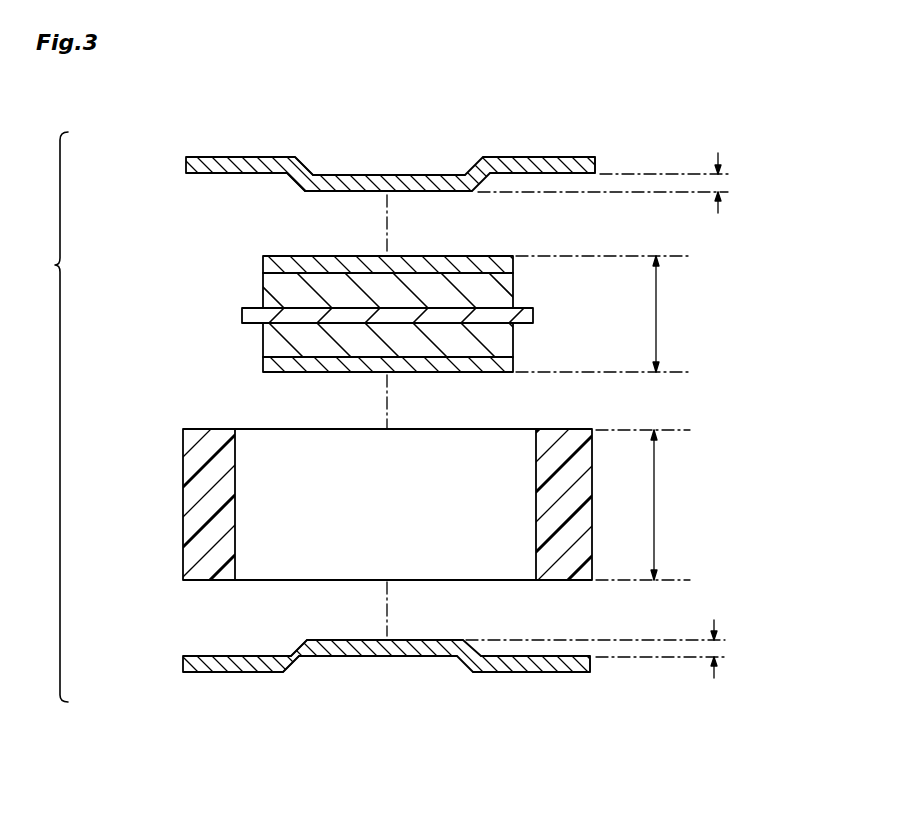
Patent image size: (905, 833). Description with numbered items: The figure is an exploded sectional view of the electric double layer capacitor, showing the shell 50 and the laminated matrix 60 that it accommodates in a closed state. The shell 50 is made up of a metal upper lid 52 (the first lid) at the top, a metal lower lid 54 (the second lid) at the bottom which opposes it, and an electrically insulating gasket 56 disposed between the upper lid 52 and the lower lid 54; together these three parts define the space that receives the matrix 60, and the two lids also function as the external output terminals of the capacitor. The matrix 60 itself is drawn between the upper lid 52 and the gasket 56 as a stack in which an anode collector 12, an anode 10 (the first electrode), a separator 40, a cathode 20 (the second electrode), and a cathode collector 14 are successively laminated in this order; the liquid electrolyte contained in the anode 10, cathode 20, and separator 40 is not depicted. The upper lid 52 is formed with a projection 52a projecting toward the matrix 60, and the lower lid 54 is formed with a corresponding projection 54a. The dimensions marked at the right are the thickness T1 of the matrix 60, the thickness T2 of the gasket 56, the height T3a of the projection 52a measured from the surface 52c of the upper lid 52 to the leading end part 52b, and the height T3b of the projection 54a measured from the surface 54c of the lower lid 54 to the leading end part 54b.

The shell 50 is at (45, 417).
The upper lid 52 is at (186, 159).
The projection 52a is at (291, 181).
The leading end part 52b is at (408, 192).
The surface 52c is at (543, 175).
The lower lid 54 is at (185, 658).
The projection 54a is at (291, 655).
The leading end part 54b is at (423, 640).
The surface 54c is at (515, 657).
The gasket 56 is at (188, 461).
The matrix 60 is at (321, 313).
The anode collector 12 is at (263, 262).
The anode 10 is at (263, 290).
The separator 40 is at (242, 315).
The cathode 20 is at (270, 340).
The cathode collector 14 is at (341, 363).
The thickness of the matrix T1 is at (603, 314).
The thickness of the gasket T2 is at (643, 505).
The height of the projection T3a is at (718, 184).
The height of the projection T3b is at (714, 649).